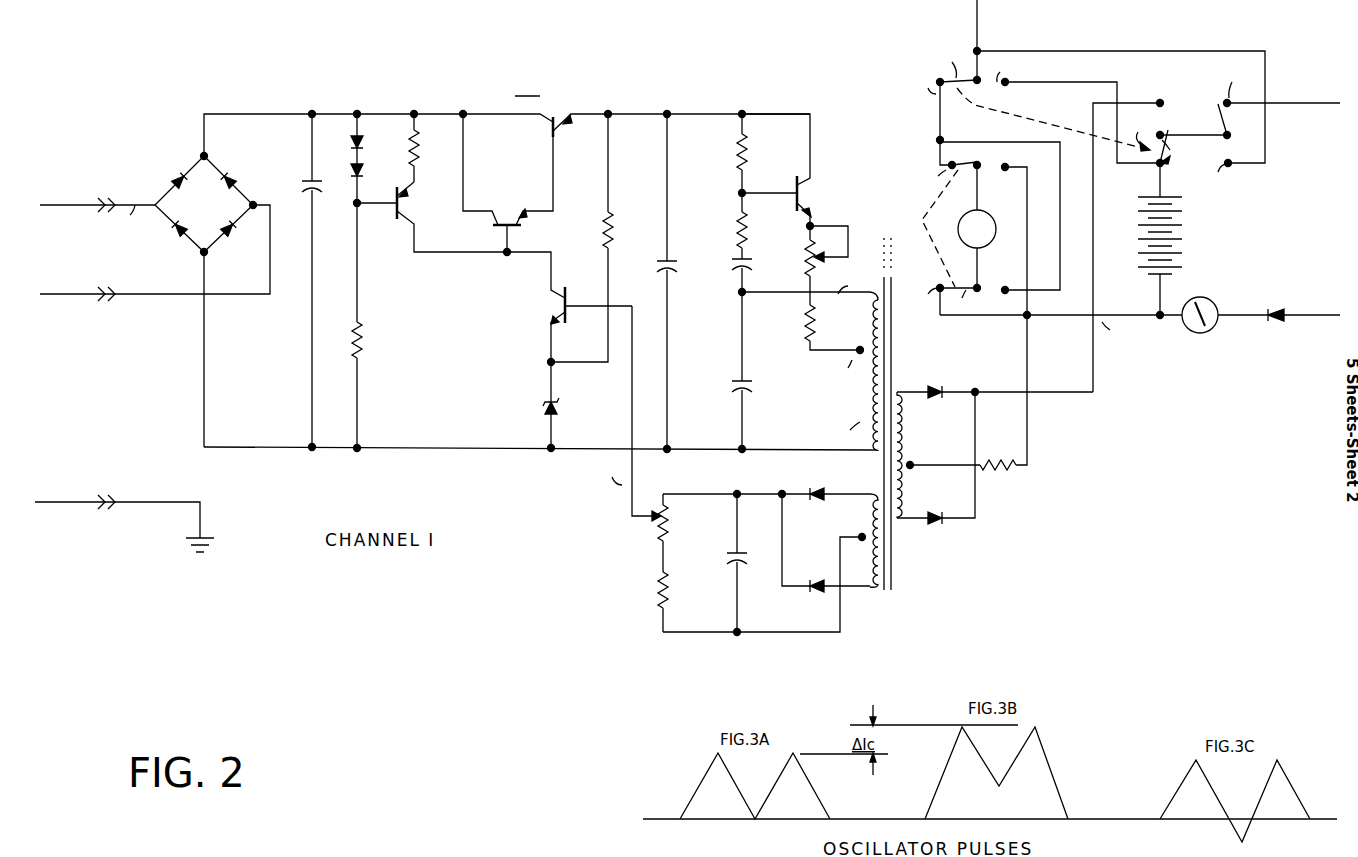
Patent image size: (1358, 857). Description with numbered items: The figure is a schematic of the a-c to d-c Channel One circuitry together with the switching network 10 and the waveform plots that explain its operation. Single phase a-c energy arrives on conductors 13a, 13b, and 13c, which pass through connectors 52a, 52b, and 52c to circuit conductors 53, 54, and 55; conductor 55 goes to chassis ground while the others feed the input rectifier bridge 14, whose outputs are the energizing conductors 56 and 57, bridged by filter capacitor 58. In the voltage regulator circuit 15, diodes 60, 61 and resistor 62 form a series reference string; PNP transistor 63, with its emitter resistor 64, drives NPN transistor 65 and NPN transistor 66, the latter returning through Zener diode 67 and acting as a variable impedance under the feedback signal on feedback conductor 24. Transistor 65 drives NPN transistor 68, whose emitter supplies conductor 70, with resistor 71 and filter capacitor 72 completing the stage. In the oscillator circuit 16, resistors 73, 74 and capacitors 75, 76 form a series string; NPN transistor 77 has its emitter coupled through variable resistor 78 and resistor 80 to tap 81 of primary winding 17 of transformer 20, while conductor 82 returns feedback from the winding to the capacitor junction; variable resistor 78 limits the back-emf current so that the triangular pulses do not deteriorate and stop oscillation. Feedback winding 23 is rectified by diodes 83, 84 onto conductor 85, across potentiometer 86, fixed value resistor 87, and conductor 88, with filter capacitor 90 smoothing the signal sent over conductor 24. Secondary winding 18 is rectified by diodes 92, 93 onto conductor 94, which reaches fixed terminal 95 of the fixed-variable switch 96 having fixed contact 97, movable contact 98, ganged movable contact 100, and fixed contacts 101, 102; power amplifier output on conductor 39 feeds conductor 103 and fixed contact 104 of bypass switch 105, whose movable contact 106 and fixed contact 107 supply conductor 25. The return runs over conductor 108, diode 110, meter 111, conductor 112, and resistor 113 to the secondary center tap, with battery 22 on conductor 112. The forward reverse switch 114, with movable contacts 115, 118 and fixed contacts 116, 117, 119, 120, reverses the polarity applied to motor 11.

The switching network 10 is at (1099, 104).
The motor 11 is at (989, 226).
The conductor 13a is at (91, 193).
The conductor 13b is at (149, 261).
The conductor 13c is at (114, 519).
The input rectifier bridge 14 is at (206, 204).
The voltage regulator circuit 15 is at (498, 265).
The oscillator circuit 16 is at (782, 281).
The primary winding 17 is at (856, 375).
The secondary winding 18 is at (917, 455).
The transformer 20 is at (840, 429).
The battery 22 is at (1174, 239).
The feedback winding 23 is at (854, 540).
The feedback conductor 24 is at (629, 413).
The conductor 25 is at (1283, 92).
The conductor 39 is at (963, 42).
The connector 52a is at (115, 193).
The connector 52b is at (115, 307).
The connector 52c is at (114, 515).
The circuit conductor 53 is at (131, 218).
The circuit conductor 54 is at (182, 349).
The circuit conductor 55 is at (178, 517).
The energizing conductor 56 is at (333, 123).
The energizing conductor 57 is at (538, 458).
The filter capacitor 58 is at (321, 279).
The diode 60 is at (370, 133).
The diode 61 is at (370, 177).
The resistor 62 is at (371, 325).
The PNP type transistor 63 is at (432, 217).
The resistor 64 is at (429, 147).
The NPN type transistor 65 is at (506, 183).
The NPN type transistor 66 is at (569, 309).
The Zener diode 67 is at (533, 405).
The NPN type transistor 68 is at (535, 162).
The conductor 70 is at (709, 104).
The resistor 71 is at (595, 237).
The filter capacitor 72 is at (677, 281).
The resistor 73 is at (728, 155).
The resistor 74 is at (728, 226).
The capacitor 75 is at (728, 274).
The capacitor 76 is at (751, 370).
The NPN type transistor 77 is at (785, 172).
The variable resistor 78 is at (813, 265).
The resistor 80 is at (832, 327).
The tap 81 is at (852, 363).
The conductor 82 is at (810, 287).
The diode 83 is at (823, 482).
The diode 84 is at (826, 556).
The conductor 85 is at (766, 485).
The potentiometer 86 is at (677, 533).
The fixed value resistor 87 is at (677, 602).
The conductor 88 is at (762, 597).
The filter capacitor 90 is at (725, 563).
The diode 92 is at (995, 380).
The diode 93 is at (936, 475).
The conductor 94 is at (1126, 247).
The fixed terminal 95 is at (1159, 93).
The fixed-variable switch 96 is at (1053, 119).
The fixed contact 97 is at (1145, 176).
The movable contact 98 is at (1192, 147).
The movable contact 100 is at (952, 61).
The fixed contact 101 is at (922, 110).
The fixed contact 102 is at (1078, 110).
The conductor 103 is at (1120, 97).
The fixed contact 104 is at (1225, 178).
The bypass switch 105 is at (1246, 129).
The movable contact 106 is at (1212, 121).
The fixed contact 107 is at (1235, 85).
The conductor 108 is at (1312, 304).
The diode 110 is at (1255, 331).
The meter 111 is at (1200, 325).
The conductor 112 is at (1061, 326).
The resistor 113 is at (967, 408).
The forward reverse switch 114 is at (936, 228).
The movable contact 115 is at (970, 153).
The fixed contact 116 is at (934, 166).
The fixed contact 117 is at (1009, 240).
The movable contact 118 is at (961, 301).
The fixed contact 119 is at (924, 301).
The fixed contact 120 is at (1000, 218).